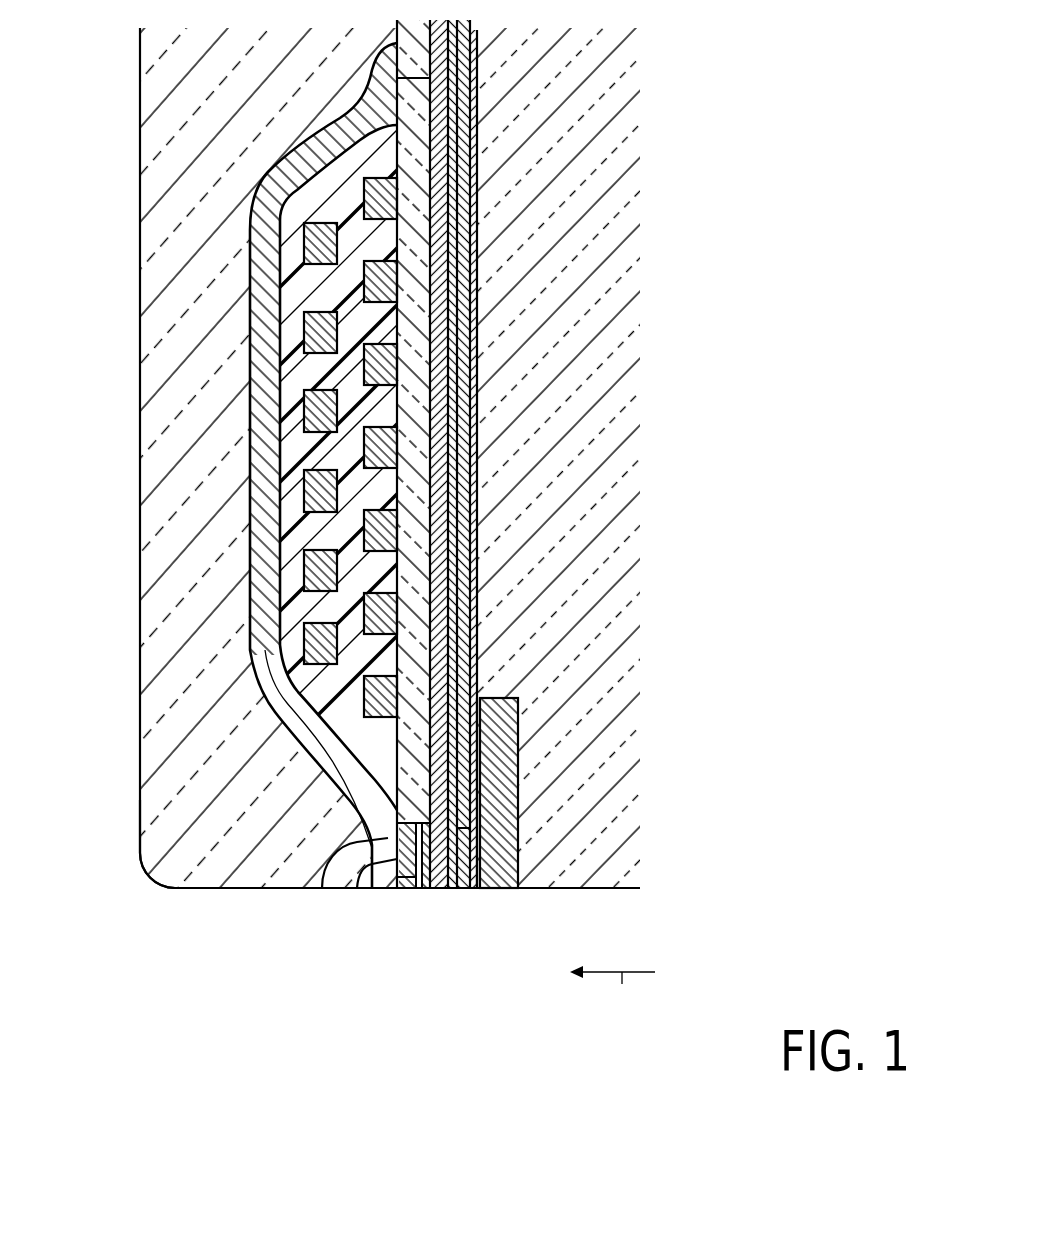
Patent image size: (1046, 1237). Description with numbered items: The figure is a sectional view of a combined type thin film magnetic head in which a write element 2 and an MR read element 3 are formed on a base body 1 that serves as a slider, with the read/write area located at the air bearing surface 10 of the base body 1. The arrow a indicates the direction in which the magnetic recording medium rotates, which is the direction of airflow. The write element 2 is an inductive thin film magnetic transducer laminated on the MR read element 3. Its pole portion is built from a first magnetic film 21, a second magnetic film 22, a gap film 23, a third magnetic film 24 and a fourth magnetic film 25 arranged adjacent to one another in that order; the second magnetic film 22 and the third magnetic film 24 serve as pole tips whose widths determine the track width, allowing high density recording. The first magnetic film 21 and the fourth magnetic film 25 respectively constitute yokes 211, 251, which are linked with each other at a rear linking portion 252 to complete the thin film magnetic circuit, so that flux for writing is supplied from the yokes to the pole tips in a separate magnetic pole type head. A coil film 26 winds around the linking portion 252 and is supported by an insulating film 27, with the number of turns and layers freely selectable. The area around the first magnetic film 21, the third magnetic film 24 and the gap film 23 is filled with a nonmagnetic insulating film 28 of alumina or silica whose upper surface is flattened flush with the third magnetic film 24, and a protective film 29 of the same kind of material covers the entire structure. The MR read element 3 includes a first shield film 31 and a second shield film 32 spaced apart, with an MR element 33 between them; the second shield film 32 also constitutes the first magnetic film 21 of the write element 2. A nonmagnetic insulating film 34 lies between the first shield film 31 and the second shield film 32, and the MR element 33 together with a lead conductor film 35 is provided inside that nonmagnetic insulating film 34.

The base body 1 is at (627, 304).
The write element 2 is at (386, 501).
The MR read element 3 is at (571, 508).
The air bearing surface 10 is at (603, 890).
The first magnetic film 21 is at (450, 880).
The second magnetic film 22 is at (432, 870).
The gap film 23 is at (400, 862).
The third magnetic film 24 is at (357, 888).
The fourth magnetic film 25 is at (386, 501).
The yoke 251 is at (255, 252).
The rear linking portion 252 is at (427, 47).
The coil film 26 is at (304, 334).
The insulating film 27 is at (285, 572).
The nonmagnetic insulating film 28 is at (420, 620).
The protective film 29 is at (170, 797).
The first shield film 31 is at (513, 760).
The second shield film 32 is at (604, 454).
The MR element 33 is at (470, 888).
The nonmagnetic insulating film 34 is at (480, 165).
The lead conductor film 35 is at (465, 232).
The yoke 211 is at (437, 680).
The direction of magnetic recording medium rotation a is at (612, 993).